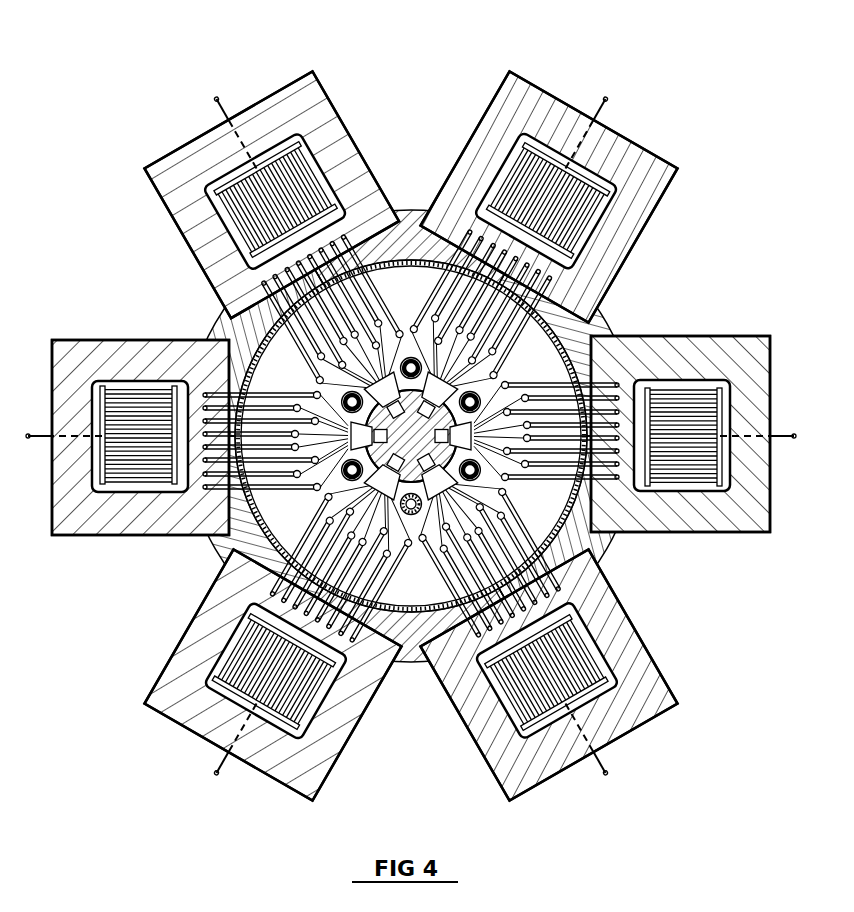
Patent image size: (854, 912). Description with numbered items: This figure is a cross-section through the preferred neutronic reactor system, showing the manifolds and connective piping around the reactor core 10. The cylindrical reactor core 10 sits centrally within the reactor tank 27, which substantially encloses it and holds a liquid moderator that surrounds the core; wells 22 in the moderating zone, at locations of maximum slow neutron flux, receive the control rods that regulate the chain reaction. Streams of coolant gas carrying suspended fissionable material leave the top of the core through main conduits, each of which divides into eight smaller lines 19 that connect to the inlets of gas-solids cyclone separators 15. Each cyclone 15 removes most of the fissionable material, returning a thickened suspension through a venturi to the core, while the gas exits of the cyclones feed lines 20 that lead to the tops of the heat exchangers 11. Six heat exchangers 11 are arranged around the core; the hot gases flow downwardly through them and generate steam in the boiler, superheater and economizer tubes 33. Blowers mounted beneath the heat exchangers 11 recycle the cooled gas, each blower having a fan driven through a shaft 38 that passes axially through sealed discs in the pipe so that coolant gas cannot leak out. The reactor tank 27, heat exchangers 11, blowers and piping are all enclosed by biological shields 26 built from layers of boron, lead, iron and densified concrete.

The reactor core 10 is at (411, 436).
The heat exchangers 11 is at (636, 388).
The gas-solids cyclone separator 15 is at (412, 517).
The smaller lines 19 is at (333, 484).
The lines 20 is at (435, 305).
The wells 22 is at (472, 388).
The biological shields 26 is at (735, 537).
The reactor tank 27 is at (552, 508).
The tubes 33 is at (700, 382).
The shaft 38 is at (780, 430).